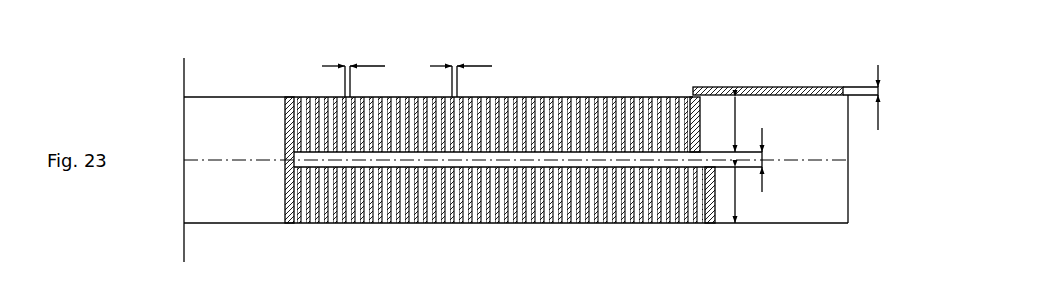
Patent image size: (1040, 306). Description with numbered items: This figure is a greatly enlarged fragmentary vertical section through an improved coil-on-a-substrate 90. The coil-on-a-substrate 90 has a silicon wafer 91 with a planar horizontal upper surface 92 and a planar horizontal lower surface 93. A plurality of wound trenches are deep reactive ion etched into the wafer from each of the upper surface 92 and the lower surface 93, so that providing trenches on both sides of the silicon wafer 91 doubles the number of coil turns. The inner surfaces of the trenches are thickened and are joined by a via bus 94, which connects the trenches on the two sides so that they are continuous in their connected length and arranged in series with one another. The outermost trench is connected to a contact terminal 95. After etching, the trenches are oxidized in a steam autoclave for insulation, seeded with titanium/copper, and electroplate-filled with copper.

The coil-on-a-substrate 90 is at (925, 74).
The silicon wafer 91 is at (849, 224).
The planar horizontal upper surface 92 is at (262, 95).
The planar horizontal lower surface 93 is at (258, 226).
The via bus 94 is at (285, 156).
The contact terminal 95 is at (741, 86).